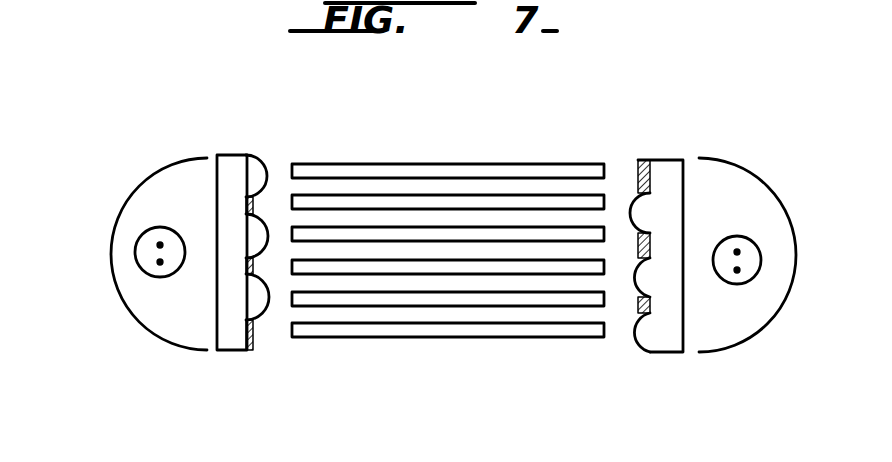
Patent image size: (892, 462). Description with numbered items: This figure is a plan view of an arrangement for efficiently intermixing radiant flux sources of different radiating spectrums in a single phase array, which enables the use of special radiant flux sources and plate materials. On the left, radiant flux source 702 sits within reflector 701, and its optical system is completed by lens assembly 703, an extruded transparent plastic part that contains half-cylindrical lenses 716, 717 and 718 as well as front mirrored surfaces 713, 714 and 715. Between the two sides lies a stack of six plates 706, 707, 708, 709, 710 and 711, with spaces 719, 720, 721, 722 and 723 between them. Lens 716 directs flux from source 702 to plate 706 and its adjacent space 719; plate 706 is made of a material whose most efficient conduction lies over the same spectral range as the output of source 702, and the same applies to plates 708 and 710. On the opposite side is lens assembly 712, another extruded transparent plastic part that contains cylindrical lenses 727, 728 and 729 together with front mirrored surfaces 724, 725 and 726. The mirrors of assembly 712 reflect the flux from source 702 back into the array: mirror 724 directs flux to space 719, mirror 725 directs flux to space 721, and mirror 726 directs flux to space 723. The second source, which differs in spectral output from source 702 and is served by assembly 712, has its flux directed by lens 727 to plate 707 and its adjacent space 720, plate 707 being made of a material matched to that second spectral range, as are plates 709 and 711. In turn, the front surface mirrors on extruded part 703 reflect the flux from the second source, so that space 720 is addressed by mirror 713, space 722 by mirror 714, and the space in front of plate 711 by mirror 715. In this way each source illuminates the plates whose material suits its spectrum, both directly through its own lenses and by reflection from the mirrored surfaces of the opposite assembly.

The reflector 701 is at (103, 228).
The radiant flux source 702 is at (135, 262).
The lens assembly 703 is at (233, 156).
The plate 706 is at (467, 145).
The plate 707 is at (408, 209).
The plate 708 is at (406, 242).
The plate 709 is at (402, 274).
The plate 710 is at (402, 306).
The plate 711 is at (396, 337).
The lens assembly 712 is at (673, 159).
The front mirrored surface 713 is at (246, 201).
The front mirrored surface 714 is at (247, 268).
The front mirrored surface 715 is at (254, 341).
The half-cylindrical lens 716 is at (280, 132).
The half-cylindrical lens 717 is at (268, 222).
The half-cylindrical lens 718 is at (264, 300).
The space 719 is at (527, 188).
The space 720 is at (547, 218).
The space 721 is at (543, 250).
The space 722 is at (565, 283).
The space 723 is at (592, 313).
The front mirrored surface 724 is at (660, 160).
The front mirrored surface 725 is at (647, 240).
The front mirrored surface 726 is at (650, 305).
The cylindrical lens 727 is at (645, 214).
The cylindrical lens 728 is at (643, 278).
The cylindrical lens 729 is at (655, 330).